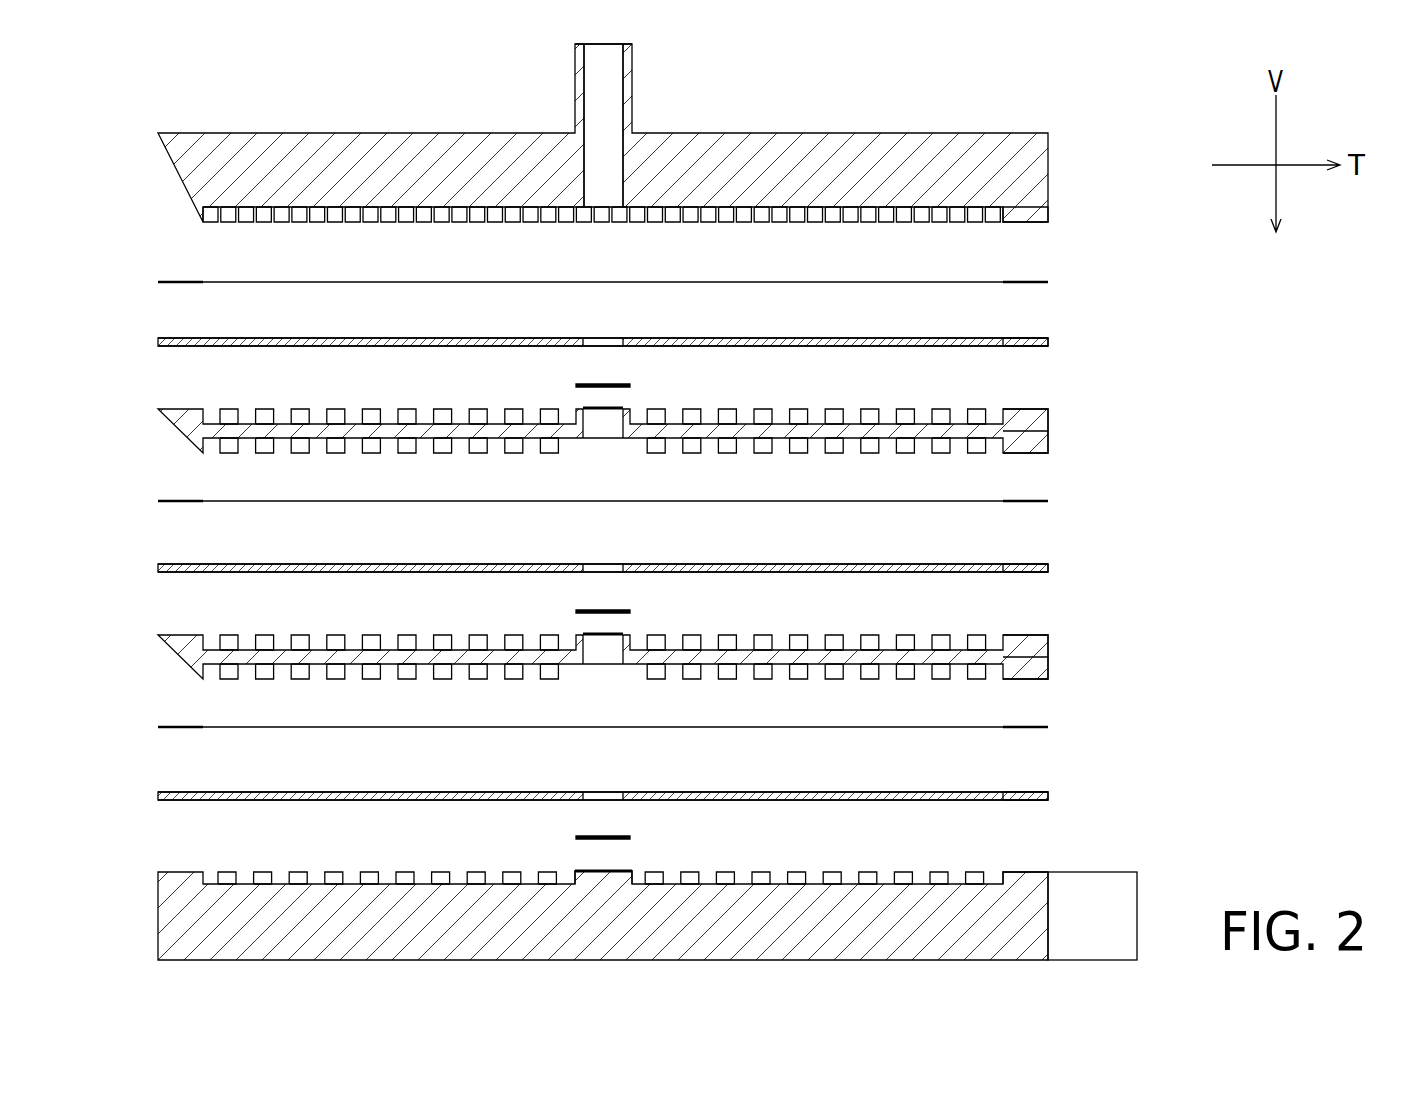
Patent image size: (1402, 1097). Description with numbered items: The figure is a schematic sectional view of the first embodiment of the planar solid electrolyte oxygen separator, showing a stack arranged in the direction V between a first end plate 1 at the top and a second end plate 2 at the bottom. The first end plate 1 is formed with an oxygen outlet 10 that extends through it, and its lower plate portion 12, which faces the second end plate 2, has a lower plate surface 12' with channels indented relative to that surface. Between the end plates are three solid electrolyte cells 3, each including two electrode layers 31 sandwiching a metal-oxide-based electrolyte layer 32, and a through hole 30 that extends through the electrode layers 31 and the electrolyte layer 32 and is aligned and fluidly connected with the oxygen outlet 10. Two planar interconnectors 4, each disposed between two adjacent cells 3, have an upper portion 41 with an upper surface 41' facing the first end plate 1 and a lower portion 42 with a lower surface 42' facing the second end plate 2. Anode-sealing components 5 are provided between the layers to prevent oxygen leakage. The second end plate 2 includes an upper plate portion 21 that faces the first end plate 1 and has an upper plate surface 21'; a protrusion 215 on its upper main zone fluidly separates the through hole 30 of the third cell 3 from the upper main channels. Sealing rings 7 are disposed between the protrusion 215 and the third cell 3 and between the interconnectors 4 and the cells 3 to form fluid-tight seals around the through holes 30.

The first end plate 1 is at (129, 179).
The oxygen outlet 10 is at (607, 102).
The lower plate portion 12 is at (547, 234).
The lower plate surface 12' is at (1064, 221).
The anode-sealing component 5 is at (1040, 282).
The solid electrolyte cell 3 is at (79, 389).
The electrode layer 31 is at (210, 346).
The through hole 30 is at (615, 338).
The metal-oxide-based electrolyte layer 32 is at (1030, 338).
The sealing ring 7 is at (627, 385).
The planar interconnector 4 is at (79, 472).
The upper portion 41 is at (530, 522).
The lower portion 42 is at (530, 560).
The upper surface 41' is at (1066, 512).
The lower surface 42' is at (1066, 557).
The second end plate 2 is at (129, 920).
The upper plate portion 21 is at (545, 858).
The protrusion 215 is at (598, 871).
The upper plate surface 21' is at (1066, 855).